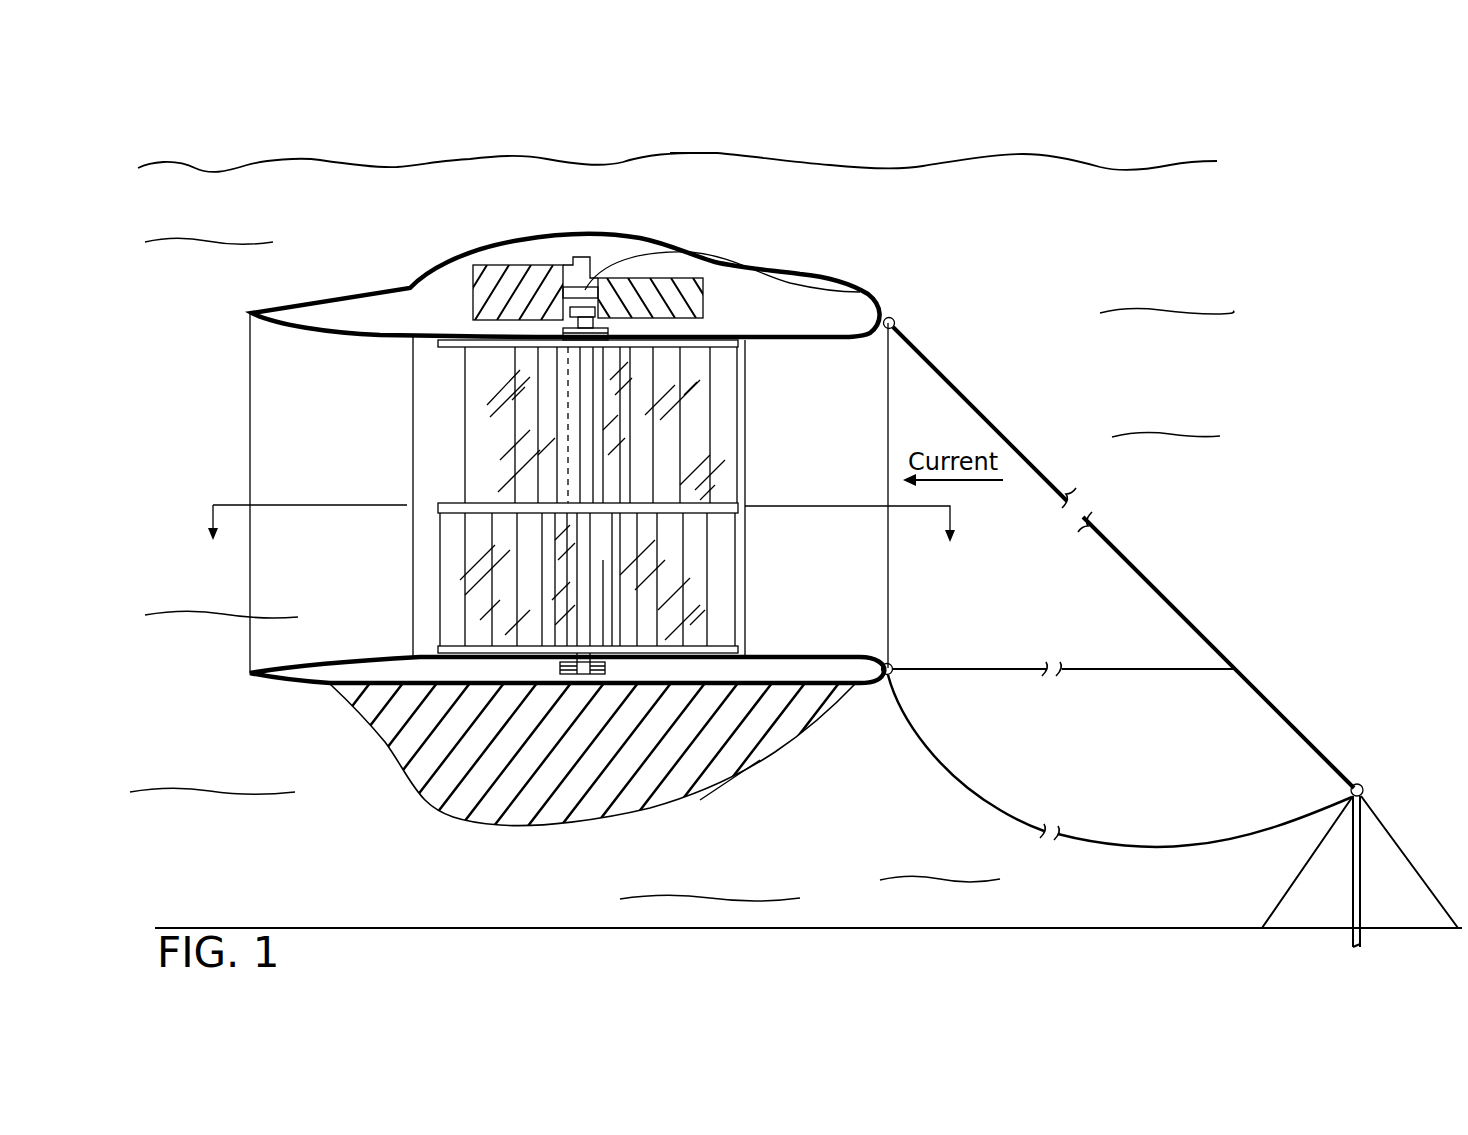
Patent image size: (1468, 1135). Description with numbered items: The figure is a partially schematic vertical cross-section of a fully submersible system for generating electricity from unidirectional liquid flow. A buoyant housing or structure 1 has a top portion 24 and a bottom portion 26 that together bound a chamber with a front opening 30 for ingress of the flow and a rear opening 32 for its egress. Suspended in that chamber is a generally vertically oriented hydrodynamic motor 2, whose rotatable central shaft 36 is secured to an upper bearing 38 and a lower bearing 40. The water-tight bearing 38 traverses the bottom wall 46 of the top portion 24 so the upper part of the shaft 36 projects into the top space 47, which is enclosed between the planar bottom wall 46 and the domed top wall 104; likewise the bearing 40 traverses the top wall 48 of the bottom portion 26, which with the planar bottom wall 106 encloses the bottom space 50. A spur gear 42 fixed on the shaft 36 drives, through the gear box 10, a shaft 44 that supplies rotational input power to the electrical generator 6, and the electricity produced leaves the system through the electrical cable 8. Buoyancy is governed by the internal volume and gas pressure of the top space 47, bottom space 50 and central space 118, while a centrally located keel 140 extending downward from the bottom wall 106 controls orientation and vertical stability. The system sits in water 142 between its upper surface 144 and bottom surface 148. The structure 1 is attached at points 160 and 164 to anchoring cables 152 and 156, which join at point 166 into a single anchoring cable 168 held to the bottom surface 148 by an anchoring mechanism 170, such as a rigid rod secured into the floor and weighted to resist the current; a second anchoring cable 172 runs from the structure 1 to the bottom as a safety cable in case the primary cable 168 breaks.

The buoyant housing 1 is at (450, 246).
The hydrodynamic motor 2 is at (752, 476).
The electrical generator 6 is at (520, 270).
The electrical cable 8 is at (585, 290).
The gear box 10 is at (770, 280).
The top portion 24 is at (440, 322).
The bottom portion 26 is at (420, 681).
The front opening 30 is at (860, 568).
The rear opening 32 is at (295, 633).
The central shaft 36 is at (578, 458).
The upper bearing 38 is at (586, 333).
The lower bearing 40 is at (590, 665).
The spur gear 42 is at (703, 290).
The shaft 44 is at (598, 309).
The bottom wall 46 is at (818, 340).
The top space 47 is at (807, 313).
The top wall 48 is at (840, 657).
The bottom space 50 is at (880, 693).
The domed top wall 104 is at (805, 266).
The bottom wall 106 is at (757, 687).
The central space 118 is at (605, 610).
The keel 140 is at (427, 783).
The water 142 is at (358, 194).
The upper surface 144 is at (717, 153).
The bottom surface 148 is at (1010, 925).
The anchoring cable 152 is at (997, 430).
The anchoring cable 156 is at (1070, 668).
The attachment point 160 is at (895, 323).
The attachment point 164 is at (897, 667).
The junction point 166 is at (1237, 670).
The single anchoring cable 168 is at (1320, 752).
The anchoring mechanism 170 is at (1365, 790).
The second anchoring cable 172 is at (1023, 821).